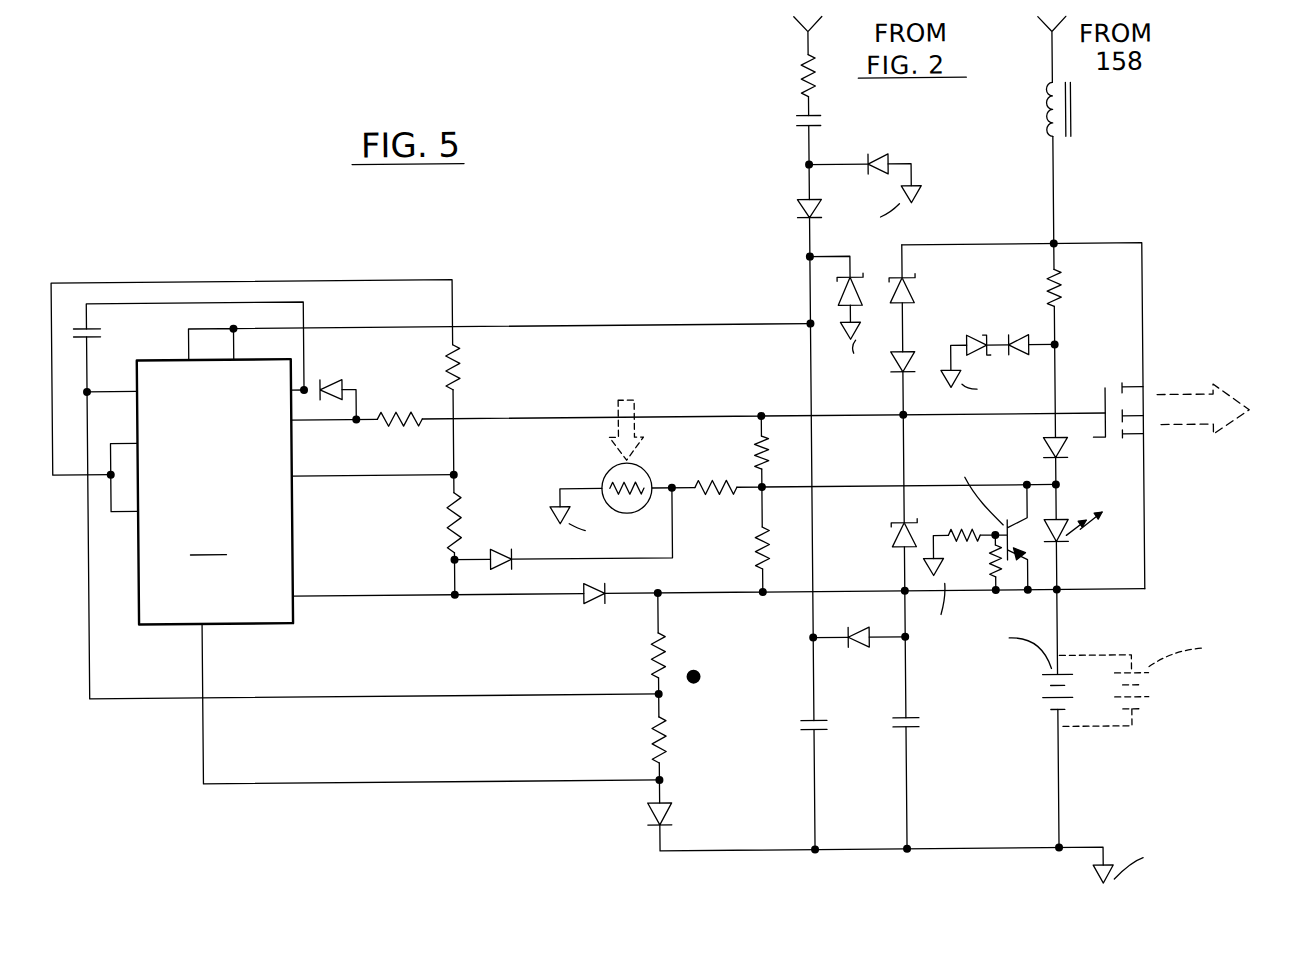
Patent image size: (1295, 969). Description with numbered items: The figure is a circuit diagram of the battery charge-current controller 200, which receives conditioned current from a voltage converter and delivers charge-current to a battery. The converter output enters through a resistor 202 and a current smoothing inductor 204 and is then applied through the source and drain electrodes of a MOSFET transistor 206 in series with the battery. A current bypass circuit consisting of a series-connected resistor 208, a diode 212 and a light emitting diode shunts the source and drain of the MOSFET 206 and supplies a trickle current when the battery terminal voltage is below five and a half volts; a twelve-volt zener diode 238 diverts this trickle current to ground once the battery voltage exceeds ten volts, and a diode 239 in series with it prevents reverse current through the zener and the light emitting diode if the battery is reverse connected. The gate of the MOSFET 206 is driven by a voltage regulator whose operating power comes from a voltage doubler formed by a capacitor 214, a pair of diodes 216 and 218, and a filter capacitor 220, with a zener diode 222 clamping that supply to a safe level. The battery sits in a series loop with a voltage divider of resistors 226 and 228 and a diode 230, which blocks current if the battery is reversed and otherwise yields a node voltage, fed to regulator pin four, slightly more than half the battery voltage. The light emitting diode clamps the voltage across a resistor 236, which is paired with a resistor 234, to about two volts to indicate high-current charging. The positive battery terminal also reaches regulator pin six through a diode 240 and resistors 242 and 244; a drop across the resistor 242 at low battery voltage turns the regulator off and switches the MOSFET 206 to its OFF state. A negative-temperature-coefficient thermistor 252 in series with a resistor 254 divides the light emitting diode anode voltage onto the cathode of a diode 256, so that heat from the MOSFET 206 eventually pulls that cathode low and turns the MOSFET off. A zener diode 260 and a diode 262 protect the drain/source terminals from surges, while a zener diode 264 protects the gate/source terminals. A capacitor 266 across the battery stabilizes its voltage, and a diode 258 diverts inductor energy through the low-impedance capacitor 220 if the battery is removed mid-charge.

The battery charge-current controller 200 is at (576, 246).
The resistor 202 is at (806, 88).
The inductor 204 is at (1078, 122).
The MOSFET transistor 206 is at (1150, 386).
The resistor 208 is at (1060, 277).
The diode 212 is at (1062, 452).
The capacitor 214 is at (798, 126).
The diode 216 is at (878, 160).
The diode 218 is at (800, 210).
The filter capacitor 220 is at (825, 734).
The zener diode 222 is at (840, 294).
The resistor 226 is at (670, 660).
The resistor 228 is at (670, 740).
The diode 230 is at (675, 817).
The resistor 234 is at (767, 442).
The resistor 236 is at (760, 543).
The zener diode 238 is at (975, 338).
The diode 239 is at (1030, 358).
The diode 240 is at (593, 604).
The resistor 242 is at (447, 520).
The resistor 244 is at (463, 378).
The negative-temperature-coefficient thermistor 252 is at (610, 468).
The resistor 254 is at (712, 482).
The diode 256 is at (503, 548).
The diode 258 is at (853, 650).
The zener diode 260 is at (907, 293).
The diode 262 is at (900, 362).
The zener diode 264 is at (893, 545).
The capacitor 266 is at (908, 733).